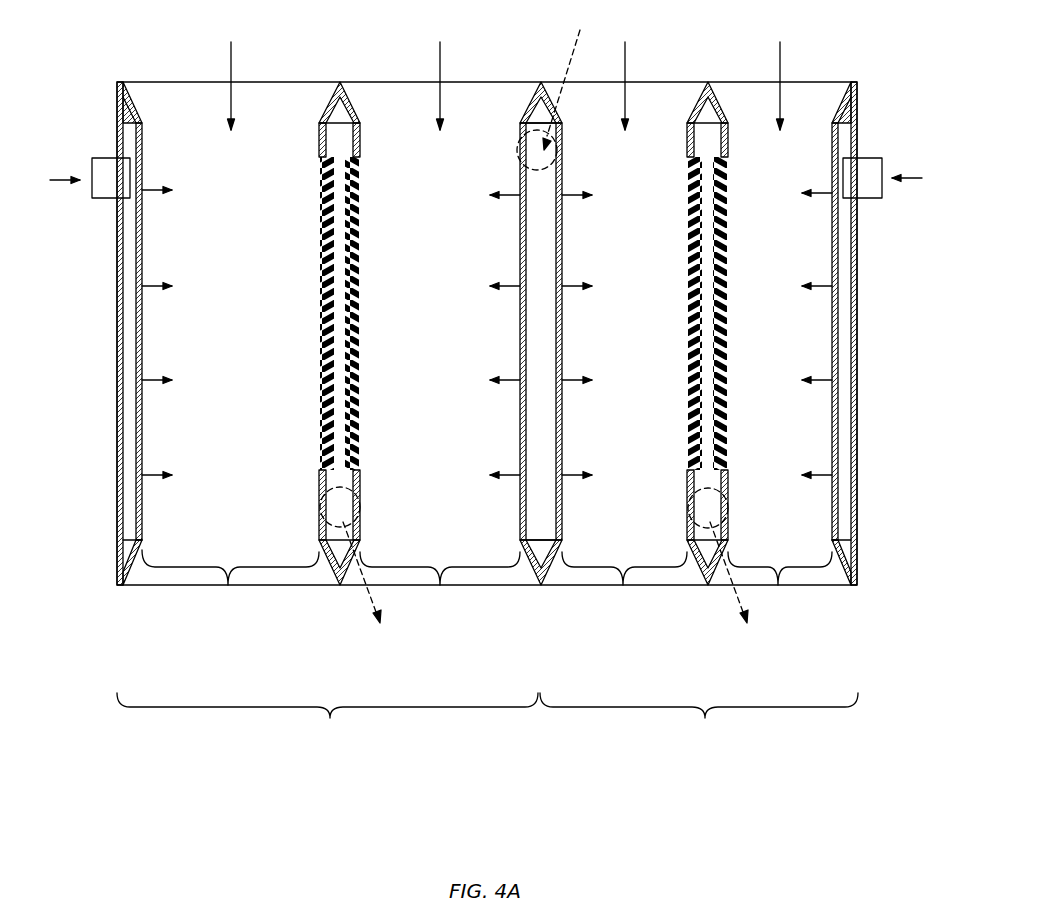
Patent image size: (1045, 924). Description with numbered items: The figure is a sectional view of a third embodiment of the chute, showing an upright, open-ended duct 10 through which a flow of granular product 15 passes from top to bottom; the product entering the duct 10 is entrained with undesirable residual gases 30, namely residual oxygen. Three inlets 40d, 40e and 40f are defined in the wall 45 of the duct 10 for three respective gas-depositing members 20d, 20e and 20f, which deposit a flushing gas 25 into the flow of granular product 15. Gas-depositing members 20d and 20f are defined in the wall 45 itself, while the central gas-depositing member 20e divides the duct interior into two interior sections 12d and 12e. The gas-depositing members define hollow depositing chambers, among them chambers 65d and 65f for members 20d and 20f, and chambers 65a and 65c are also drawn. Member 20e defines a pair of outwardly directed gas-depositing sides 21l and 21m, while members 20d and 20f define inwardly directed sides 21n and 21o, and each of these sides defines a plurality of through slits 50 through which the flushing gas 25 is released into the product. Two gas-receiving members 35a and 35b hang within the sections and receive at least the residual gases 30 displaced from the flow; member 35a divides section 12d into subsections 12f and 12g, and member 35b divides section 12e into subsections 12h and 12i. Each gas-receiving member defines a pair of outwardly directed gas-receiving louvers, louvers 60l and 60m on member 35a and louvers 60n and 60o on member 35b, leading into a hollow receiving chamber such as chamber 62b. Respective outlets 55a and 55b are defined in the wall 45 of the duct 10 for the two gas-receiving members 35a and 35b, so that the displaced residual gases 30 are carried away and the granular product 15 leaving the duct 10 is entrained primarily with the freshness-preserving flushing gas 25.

The duct 10 is at (870, 559).
The interior section 12d is at (327, 721).
The interior section 12e is at (699, 721).
The subsection 12f is at (228, 585).
The subsection 12g is at (440, 585).
The subsection 12h is at (623, 585).
The subsection 12i is at (778, 585).
The granular product 15 is at (231, 62).
The gas-depositing member 20d is at (171, 362).
The gas-depositing member 20e is at (542, 363).
The gas-depositing member 20f is at (866, 363).
The gas-depositing side 21l is at (520, 400).
The gas-depositing side 21m is at (562, 400).
The gas-depositing side 21n is at (145, 400).
The gas-depositing side 21o is at (832, 400).
The flushing gas 25 is at (150, 195).
The residual gases 30 is at (550, 587).
The gas-receiving member 35a is at (340, 583).
The gas-receiving member 35b is at (708, 583).
The inlet 40d is at (95, 160).
The inlet 40e is at (522, 142).
The inlet 40f is at (882, 196).
The wall 45 is at (117, 415).
The through slits 50 is at (142, 183).
The outlet 55a is at (325, 490).
The outlet 55b is at (690, 490).
The gas-receiving louver 60l is at (322, 190).
The gas-receiving louver 60m is at (360, 190).
The gas-receiving louver 60n is at (690, 190).
The gas-receiving louver 60o is at (728, 190).
The hollow receiving chamber 62b is at (697, 377).
The plate 65a is at (334, 377).
The plate 65c is at (562, 335).
The hollow depositing chamber 65d is at (142, 333).
The hollow depositing chamber 65f is at (857, 335).